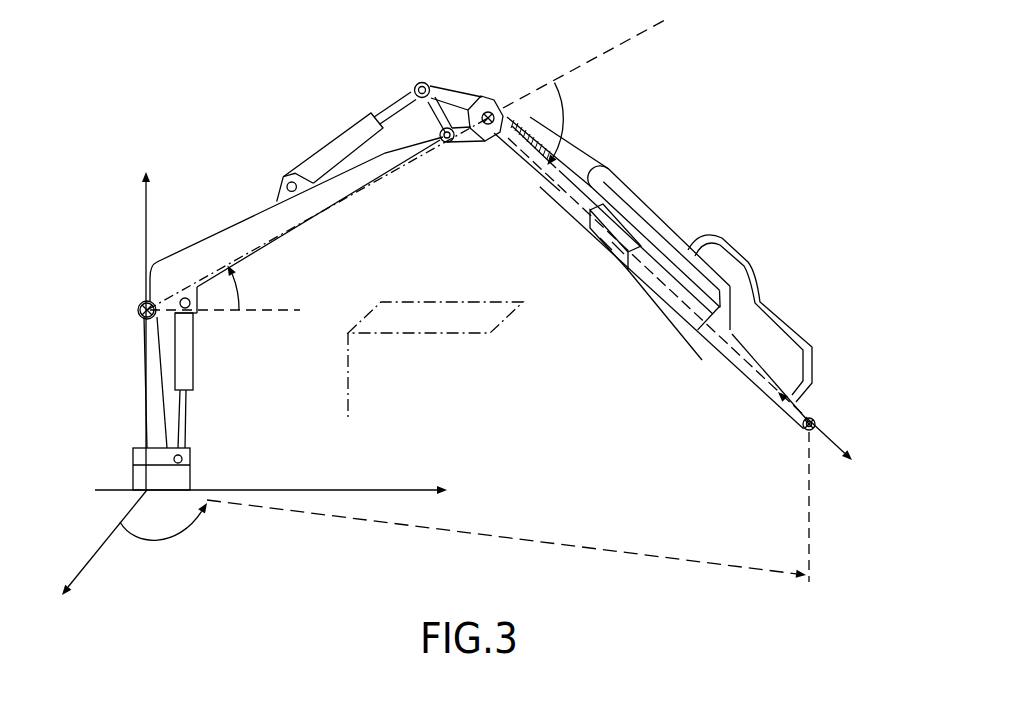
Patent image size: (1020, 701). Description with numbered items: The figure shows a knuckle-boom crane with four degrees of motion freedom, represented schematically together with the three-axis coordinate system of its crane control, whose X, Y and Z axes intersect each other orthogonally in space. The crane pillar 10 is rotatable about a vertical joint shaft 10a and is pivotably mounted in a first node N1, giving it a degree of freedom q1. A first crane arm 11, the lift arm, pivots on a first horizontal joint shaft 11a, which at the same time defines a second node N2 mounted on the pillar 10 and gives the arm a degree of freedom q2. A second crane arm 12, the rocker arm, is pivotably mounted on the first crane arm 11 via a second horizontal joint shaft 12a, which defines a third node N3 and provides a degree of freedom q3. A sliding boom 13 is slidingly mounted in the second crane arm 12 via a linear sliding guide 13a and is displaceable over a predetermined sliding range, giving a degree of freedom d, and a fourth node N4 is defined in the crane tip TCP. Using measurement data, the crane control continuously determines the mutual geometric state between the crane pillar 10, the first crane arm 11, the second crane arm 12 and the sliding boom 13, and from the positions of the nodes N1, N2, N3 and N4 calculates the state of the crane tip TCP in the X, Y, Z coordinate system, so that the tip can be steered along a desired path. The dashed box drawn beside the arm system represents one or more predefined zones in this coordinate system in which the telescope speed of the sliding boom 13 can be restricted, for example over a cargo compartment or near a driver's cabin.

The crane pillar 10 is at (160, 401).
The vertical joint shaft 10a is at (133, 466).
The first crane arm 11 is at (260, 222).
The first horizontal joint shaft 11a is at (140, 306).
The second crane arm 12 is at (630, 194).
The second horizontal joint shaft 12a is at (483, 97).
The sliding boom 13 is at (743, 360).
The linear sliding guide 13a is at (627, 263).
The first node N1 is at (190, 464).
The second node N2 is at (141, 316).
The third node N3 is at (489, 131).
The fourth node N4 is at (802, 433).
The crane tip TCP is at (818, 412).
The degree of freedom of the sliding boom d is at (832, 432).
The degree of freedom of the crane pillar q1 is at (163, 533).
The degree of freedom of the first crane arm q2 is at (243, 295).
The degree of freedom of the second crane arm q3 is at (568, 112).
The X axis X is at (95, 561).
The Y axis Y is at (285, 492).
The Z axis Z is at (145, 314).